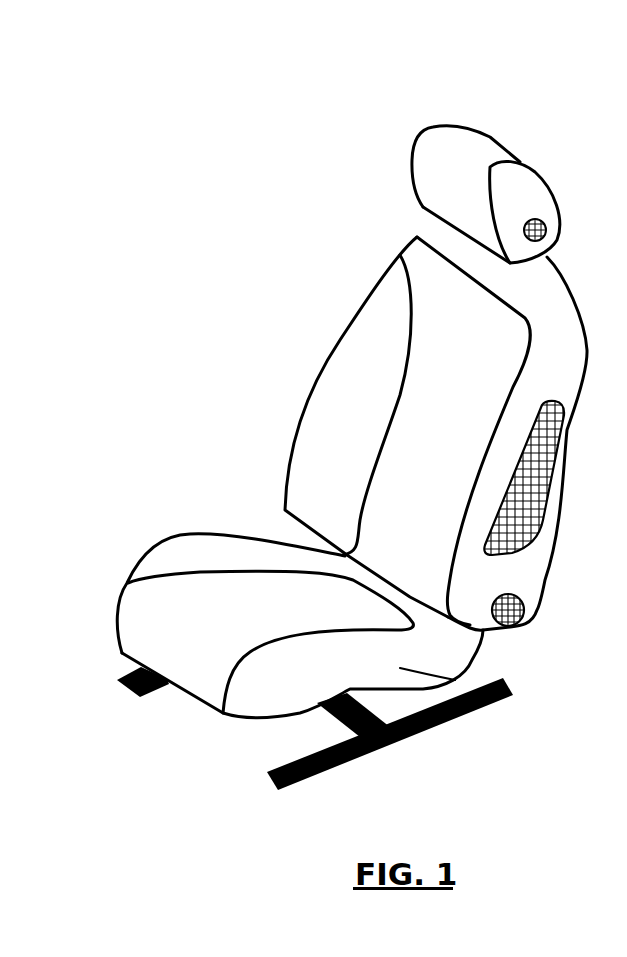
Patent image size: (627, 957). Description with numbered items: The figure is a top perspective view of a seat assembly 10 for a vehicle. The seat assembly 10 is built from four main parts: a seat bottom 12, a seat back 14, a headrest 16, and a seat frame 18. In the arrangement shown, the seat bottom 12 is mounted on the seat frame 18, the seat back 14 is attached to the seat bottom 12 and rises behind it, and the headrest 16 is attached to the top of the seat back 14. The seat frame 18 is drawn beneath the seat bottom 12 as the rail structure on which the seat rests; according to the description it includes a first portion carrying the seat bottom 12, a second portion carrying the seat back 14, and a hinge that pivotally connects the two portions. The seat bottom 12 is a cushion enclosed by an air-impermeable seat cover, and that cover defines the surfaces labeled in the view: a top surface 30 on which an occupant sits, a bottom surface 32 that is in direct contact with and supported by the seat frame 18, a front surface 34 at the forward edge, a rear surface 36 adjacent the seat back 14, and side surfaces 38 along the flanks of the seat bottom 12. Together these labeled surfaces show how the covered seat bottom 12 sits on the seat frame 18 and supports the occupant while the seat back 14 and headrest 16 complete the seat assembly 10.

The seat assembly 10 is at (243, 148).
The seat bottom 12 is at (247, 595).
The seat back 14 is at (430, 425).
The headrest 16 is at (435, 177).
The seat frame 18 is at (395, 742).
The top surface 30 is at (197, 590).
The bottom surface 32 is at (317, 705).
The front surface 34 is at (193, 663).
The rear surface 36 is at (477, 640).
The side surfaces 38 is at (273, 540).